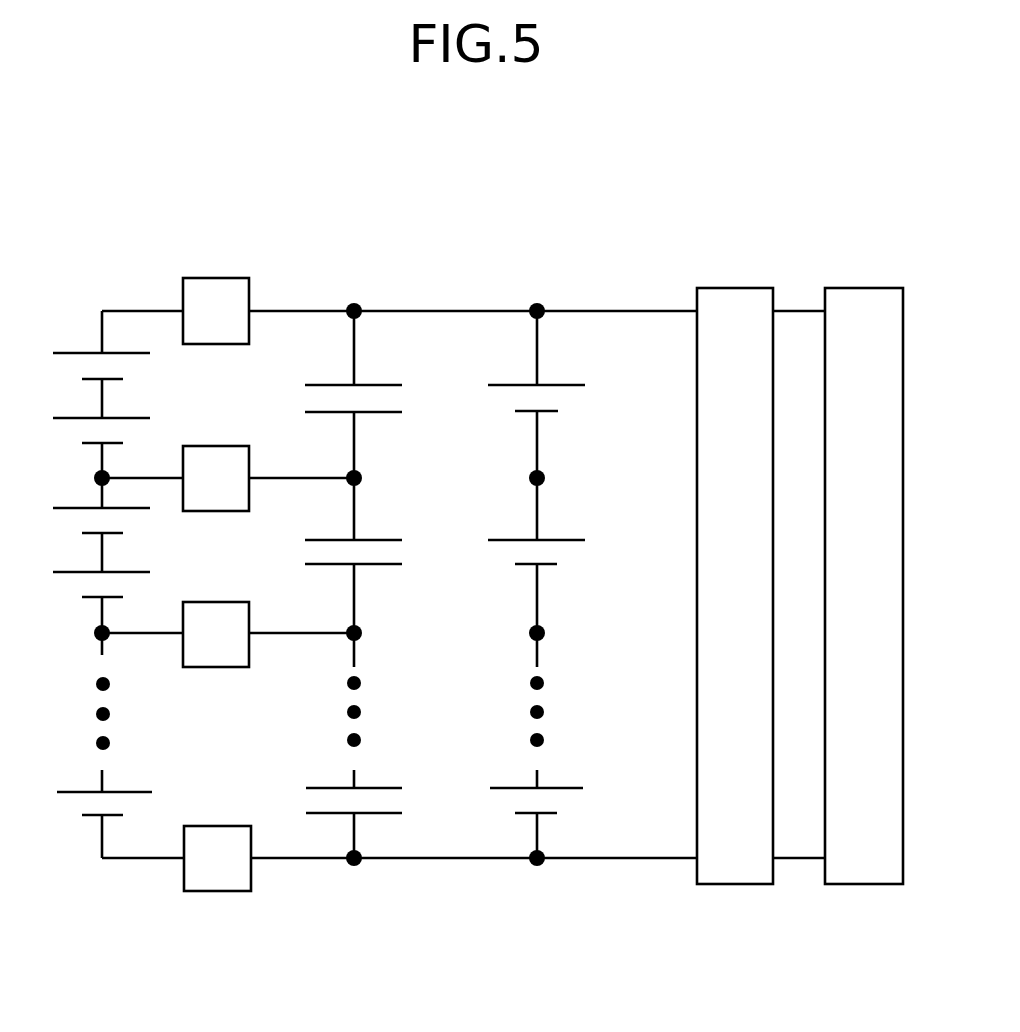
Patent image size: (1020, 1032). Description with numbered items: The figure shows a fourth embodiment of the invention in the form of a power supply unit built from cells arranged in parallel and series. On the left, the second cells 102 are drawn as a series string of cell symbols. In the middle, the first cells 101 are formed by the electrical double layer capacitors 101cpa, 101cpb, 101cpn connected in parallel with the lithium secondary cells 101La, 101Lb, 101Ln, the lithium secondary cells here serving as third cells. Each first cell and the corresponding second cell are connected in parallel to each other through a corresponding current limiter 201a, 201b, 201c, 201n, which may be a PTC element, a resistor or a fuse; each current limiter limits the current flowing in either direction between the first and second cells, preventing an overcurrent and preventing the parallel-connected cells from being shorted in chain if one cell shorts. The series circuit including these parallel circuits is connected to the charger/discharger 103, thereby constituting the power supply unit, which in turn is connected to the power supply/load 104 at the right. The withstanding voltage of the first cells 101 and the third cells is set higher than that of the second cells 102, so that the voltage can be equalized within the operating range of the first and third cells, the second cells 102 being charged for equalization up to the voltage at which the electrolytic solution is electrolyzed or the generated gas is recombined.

The second cell group 102 is at (102, 307).
The current limiter 201a is at (202, 278).
The current limiter 201b is at (202, 446).
The current limiter 201c is at (202, 602).
The current limiter 201n is at (203, 826).
The first cell group 101 is at (527, 277).
The electrical double layer capacitor 101cpa is at (397, 395).
The electrical double layer capacitor 101cpb is at (398, 552).
The electrical double layer capacitor 101cpn is at (407, 802).
The lithium secondary cell 101La is at (582, 395).
The lithium secondary cell 101Lb is at (583, 552).
The lithium secondary cell 101Ln is at (590, 802).
The charger/discharger 103 is at (733, 288).
The power supply/load 104 is at (862, 288).